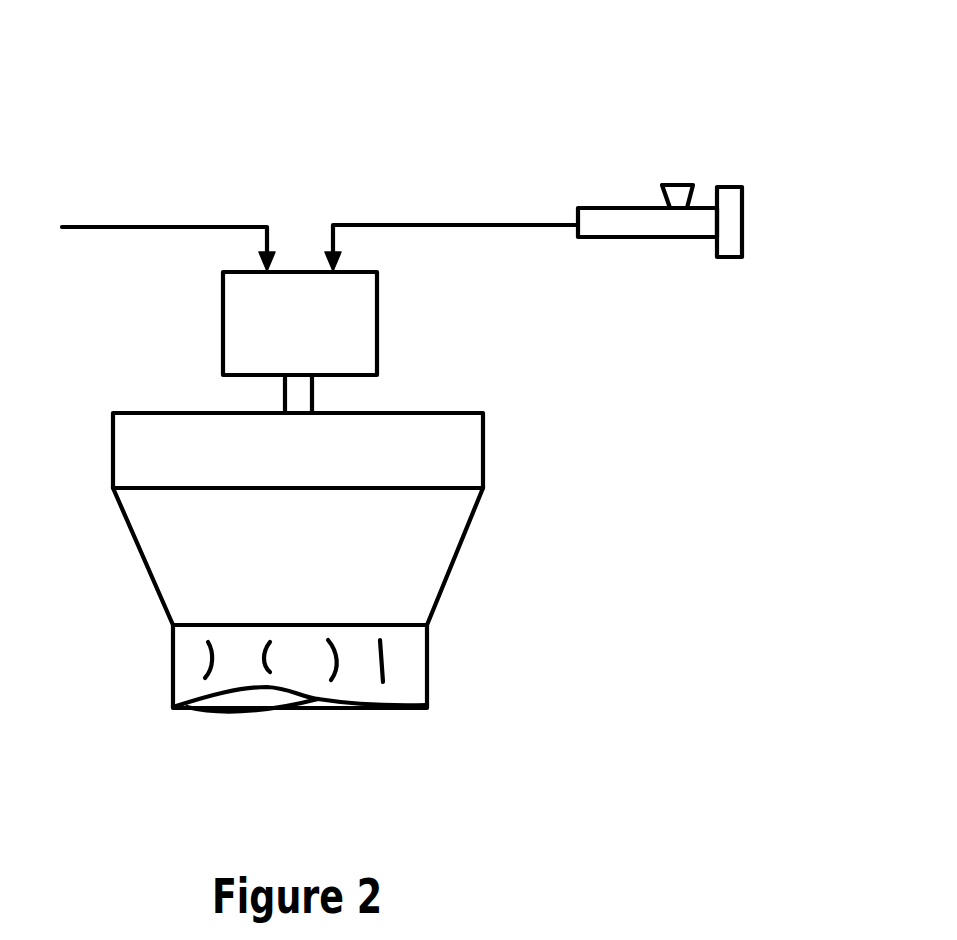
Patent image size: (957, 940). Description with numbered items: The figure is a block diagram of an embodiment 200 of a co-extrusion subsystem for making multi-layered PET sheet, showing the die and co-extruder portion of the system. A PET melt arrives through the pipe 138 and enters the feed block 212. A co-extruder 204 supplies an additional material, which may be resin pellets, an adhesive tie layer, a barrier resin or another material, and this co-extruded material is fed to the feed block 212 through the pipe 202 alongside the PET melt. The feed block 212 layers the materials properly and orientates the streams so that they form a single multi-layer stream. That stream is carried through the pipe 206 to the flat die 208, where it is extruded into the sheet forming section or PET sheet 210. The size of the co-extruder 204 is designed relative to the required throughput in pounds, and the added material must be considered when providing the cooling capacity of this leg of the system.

The co-extrusion subsystem 200 is at (736, 131).
The pipe 138 is at (117, 227).
The pipe 202 is at (394, 225).
The co-extruder 204 is at (609, 208).
The pipe 206 is at (313, 381).
The flat die 208 is at (483, 443).
The PET sheet 210 is at (173, 668).
The feed block 212 is at (223, 329).